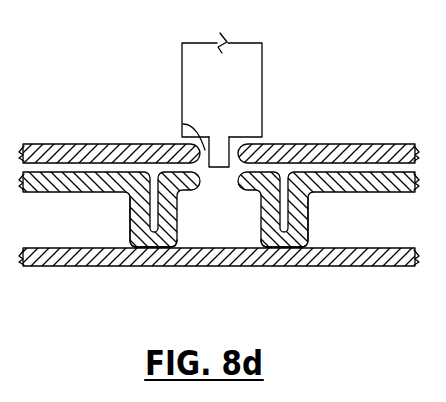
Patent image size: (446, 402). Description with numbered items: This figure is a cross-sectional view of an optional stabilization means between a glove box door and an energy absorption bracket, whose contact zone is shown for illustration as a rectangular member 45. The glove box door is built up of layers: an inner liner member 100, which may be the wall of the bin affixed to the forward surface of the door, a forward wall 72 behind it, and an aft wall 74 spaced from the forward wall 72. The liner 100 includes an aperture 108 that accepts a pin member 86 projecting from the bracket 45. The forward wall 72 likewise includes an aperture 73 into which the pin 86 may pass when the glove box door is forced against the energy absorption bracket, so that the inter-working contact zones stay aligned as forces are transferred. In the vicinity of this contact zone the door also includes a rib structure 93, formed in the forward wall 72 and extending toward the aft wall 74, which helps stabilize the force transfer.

The rectangular member 45 is at (246, 60).
The pin member 86 is at (223, 149).
The aperture 108 is at (183, 124).
The forward liner member 100 is at (357, 143).
The forward wall 72 is at (359, 181).
The rib structure 93 is at (140, 222).
The aperture 73 is at (218, 183).
The aft wall 74 is at (386, 268).